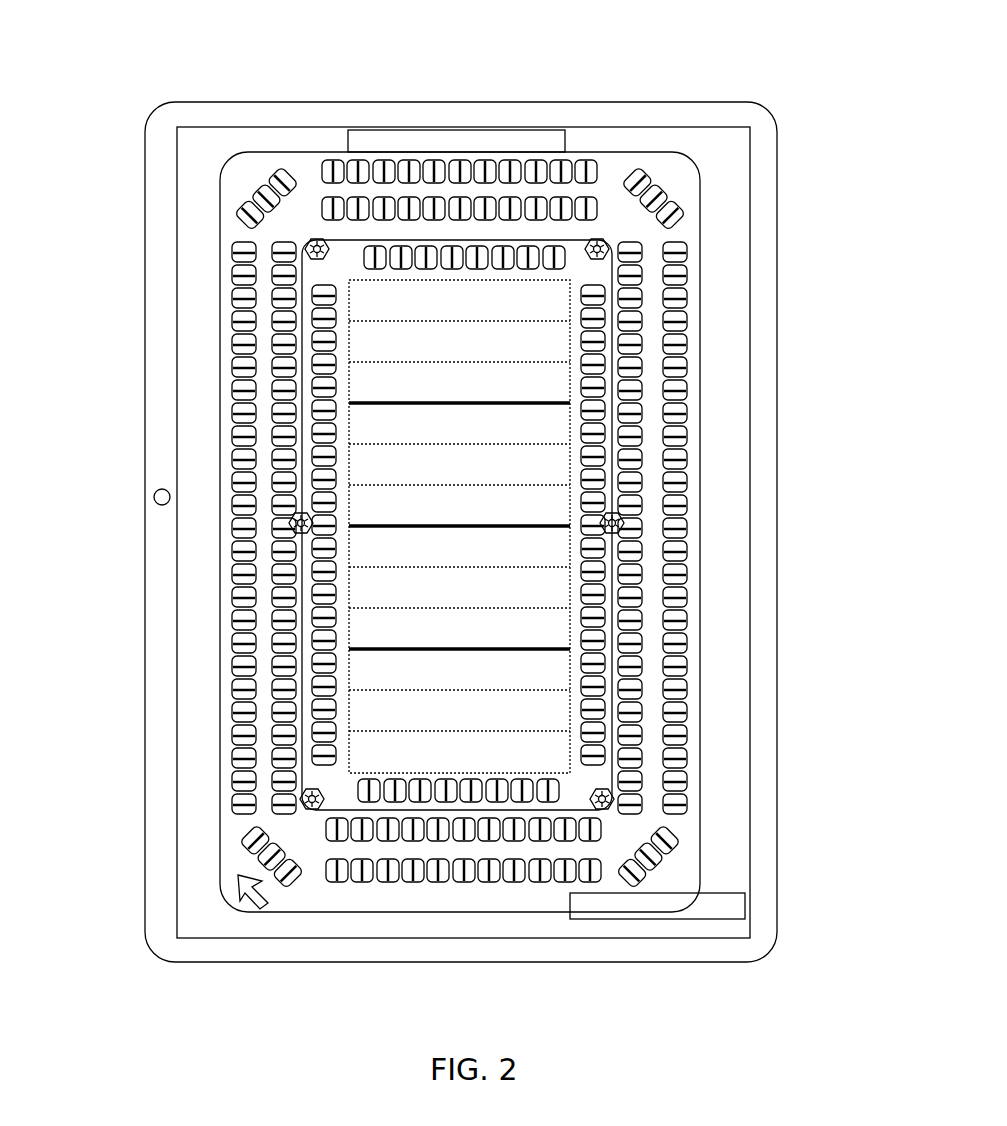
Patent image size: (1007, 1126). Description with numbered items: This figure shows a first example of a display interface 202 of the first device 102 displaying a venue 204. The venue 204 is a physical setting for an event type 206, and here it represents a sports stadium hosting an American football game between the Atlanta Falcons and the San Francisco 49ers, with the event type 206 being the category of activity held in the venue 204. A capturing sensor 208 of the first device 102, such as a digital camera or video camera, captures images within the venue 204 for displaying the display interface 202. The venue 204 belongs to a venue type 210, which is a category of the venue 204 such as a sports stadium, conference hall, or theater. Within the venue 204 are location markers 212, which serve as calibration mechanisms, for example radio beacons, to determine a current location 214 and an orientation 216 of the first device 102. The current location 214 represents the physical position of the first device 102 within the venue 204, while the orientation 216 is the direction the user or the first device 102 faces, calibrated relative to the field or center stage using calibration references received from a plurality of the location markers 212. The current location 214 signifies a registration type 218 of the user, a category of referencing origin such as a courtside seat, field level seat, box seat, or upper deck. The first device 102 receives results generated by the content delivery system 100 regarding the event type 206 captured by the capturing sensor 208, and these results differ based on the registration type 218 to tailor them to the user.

The content delivery system 100 is at (198, 76).
The first device 102 is at (606, 92).
The display interface 202 is at (283, 143).
The venue 204 is at (457, 893).
The event type 206 is at (483, 145).
The capturing sensor 208 is at (157, 493).
The venue type 210 is at (758, 907).
The location marker 212 is at (605, 241).
The current location 214 is at (685, 722).
The orientation 216 is at (256, 896).
The registration type 218 is at (330, 262).